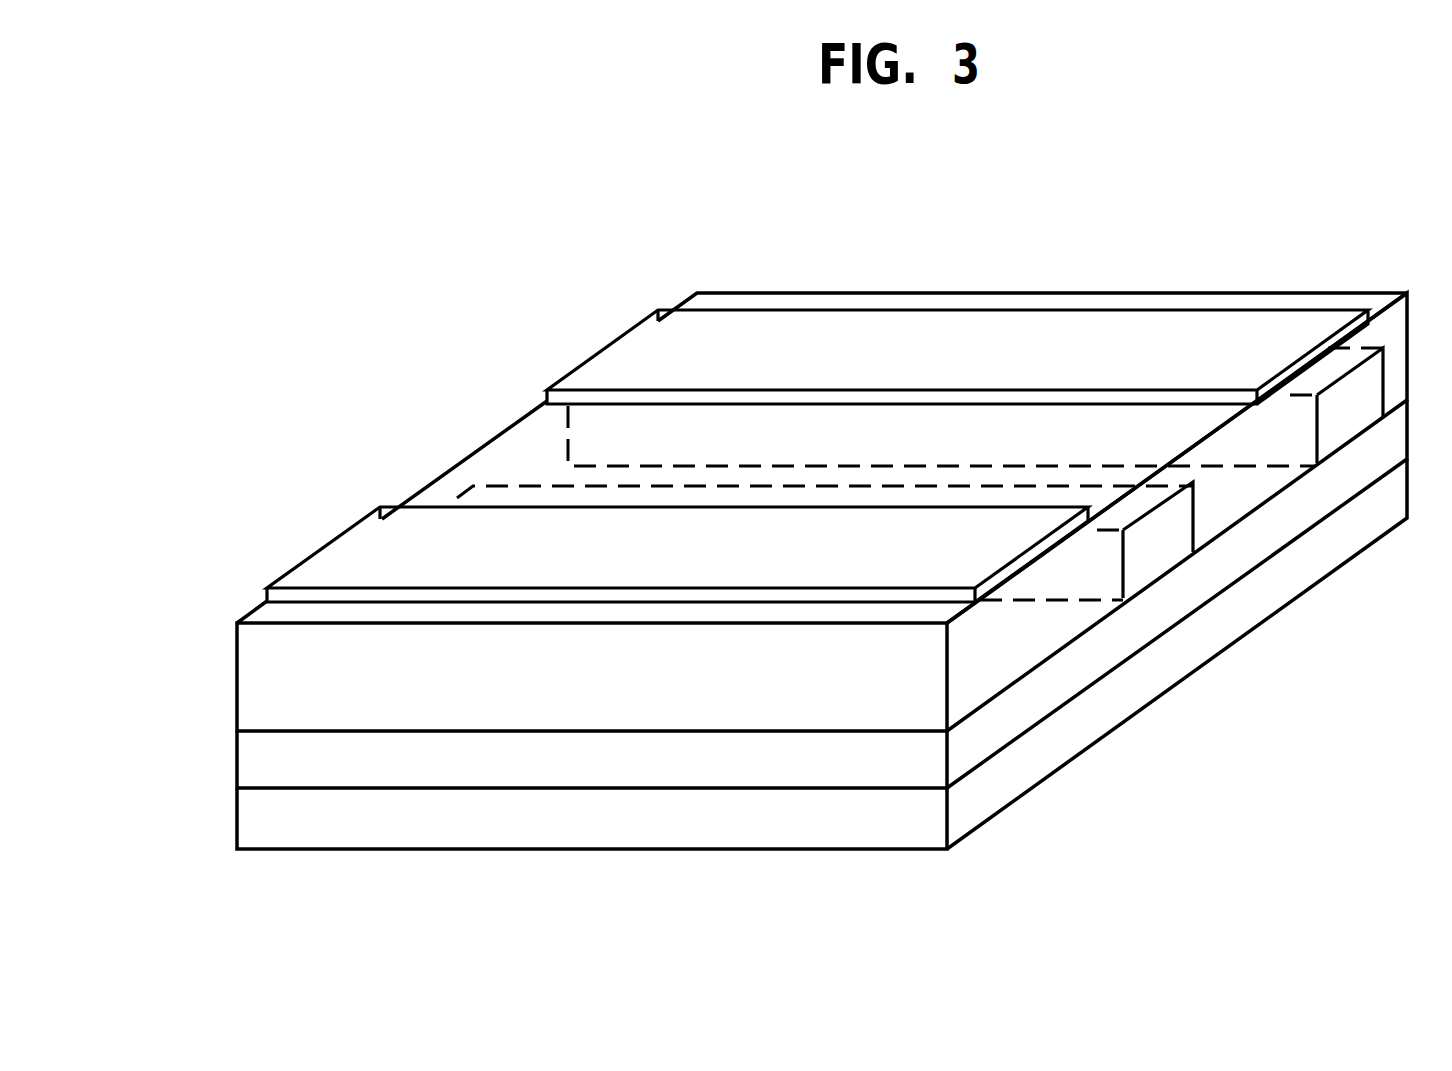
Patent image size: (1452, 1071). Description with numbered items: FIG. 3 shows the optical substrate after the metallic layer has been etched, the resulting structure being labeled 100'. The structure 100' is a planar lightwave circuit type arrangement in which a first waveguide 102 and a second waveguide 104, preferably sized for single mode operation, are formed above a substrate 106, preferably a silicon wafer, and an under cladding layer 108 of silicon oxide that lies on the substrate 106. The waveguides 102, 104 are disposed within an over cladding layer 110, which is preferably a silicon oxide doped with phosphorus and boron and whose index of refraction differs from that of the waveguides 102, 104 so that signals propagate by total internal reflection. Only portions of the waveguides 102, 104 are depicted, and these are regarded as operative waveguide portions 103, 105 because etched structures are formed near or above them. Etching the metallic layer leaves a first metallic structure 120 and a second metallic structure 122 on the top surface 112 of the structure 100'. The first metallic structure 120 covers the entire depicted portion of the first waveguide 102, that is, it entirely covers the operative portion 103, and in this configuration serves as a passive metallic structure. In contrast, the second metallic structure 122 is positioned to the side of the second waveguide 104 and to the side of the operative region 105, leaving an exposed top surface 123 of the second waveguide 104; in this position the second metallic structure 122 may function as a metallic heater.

The resulting structure 100' is at (795, 547).
The first waveguide 102 is at (1350, 422).
The operative waveguide portion 103 is at (587, 433).
The second waveguide 104 is at (1173, 548).
The operative waveguide portion 105 is at (1063, 592).
The substrate 106 is at (330, 847).
The under cladding layer 108 is at (248, 770).
The over cladding layer 110 is at (248, 675).
The top surface 112 is at (1377, 300).
The first metallic structure 120 is at (1000, 320).
The second metallic structure 122 is at (357, 543).
The exposed top surface 123 is at (1103, 497).